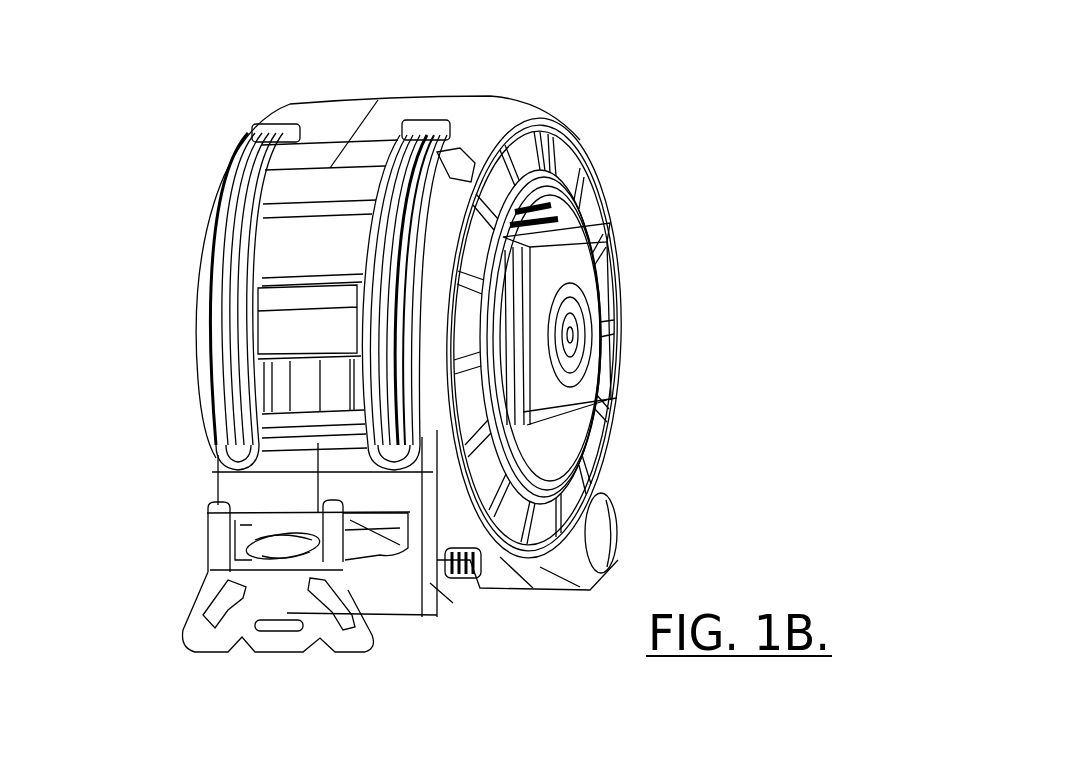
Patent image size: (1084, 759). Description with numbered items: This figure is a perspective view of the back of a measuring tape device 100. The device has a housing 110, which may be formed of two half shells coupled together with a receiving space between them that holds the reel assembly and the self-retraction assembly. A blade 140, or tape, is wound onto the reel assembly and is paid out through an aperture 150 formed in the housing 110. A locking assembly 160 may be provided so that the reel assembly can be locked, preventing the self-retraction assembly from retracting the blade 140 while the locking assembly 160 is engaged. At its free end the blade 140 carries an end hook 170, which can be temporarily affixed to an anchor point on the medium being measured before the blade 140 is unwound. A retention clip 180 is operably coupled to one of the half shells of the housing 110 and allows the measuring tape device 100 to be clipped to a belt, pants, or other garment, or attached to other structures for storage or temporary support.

The measuring tape device 100 is at (207, 78).
The housing 110 is at (556, 158).
The blade 140 is at (365, 532).
The aperture 150 is at (282, 518).
The locking assembly 160 is at (262, 256).
The end hook 170 is at (362, 617).
The retention clip 180 is at (597, 385).